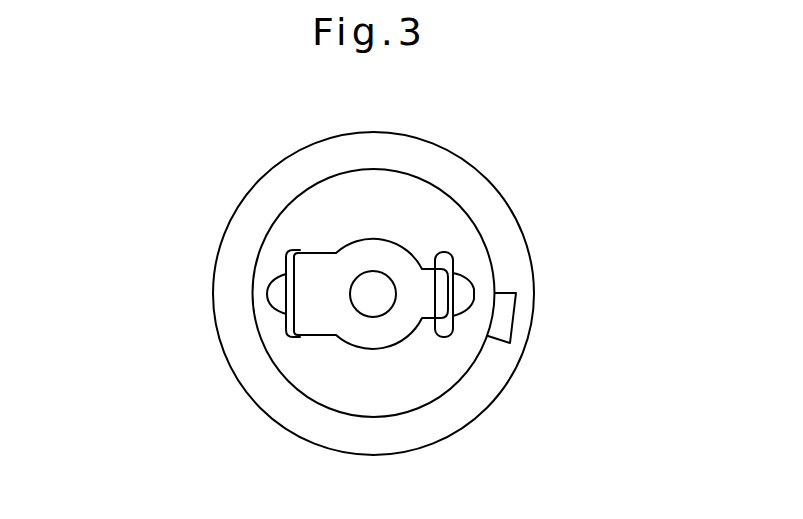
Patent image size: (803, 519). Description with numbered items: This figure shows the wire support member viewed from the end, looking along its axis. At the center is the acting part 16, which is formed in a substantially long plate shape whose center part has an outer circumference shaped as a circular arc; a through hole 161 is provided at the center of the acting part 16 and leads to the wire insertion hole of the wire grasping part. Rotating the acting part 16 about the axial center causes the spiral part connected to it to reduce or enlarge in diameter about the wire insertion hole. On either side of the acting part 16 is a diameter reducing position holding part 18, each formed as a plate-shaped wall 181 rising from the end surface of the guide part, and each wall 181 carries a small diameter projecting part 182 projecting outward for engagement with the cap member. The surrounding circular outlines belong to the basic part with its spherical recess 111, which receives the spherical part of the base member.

The acting part 16 is at (331, 221).
The through hole 161 is at (371, 294).
The diameter reducing position holding part 18 is at (387, 264).
The plate-shaped wall 181 is at (291, 282).
The small diameter projecting part 182 is at (278, 294).
The spherical recess 111 is at (465, 407).